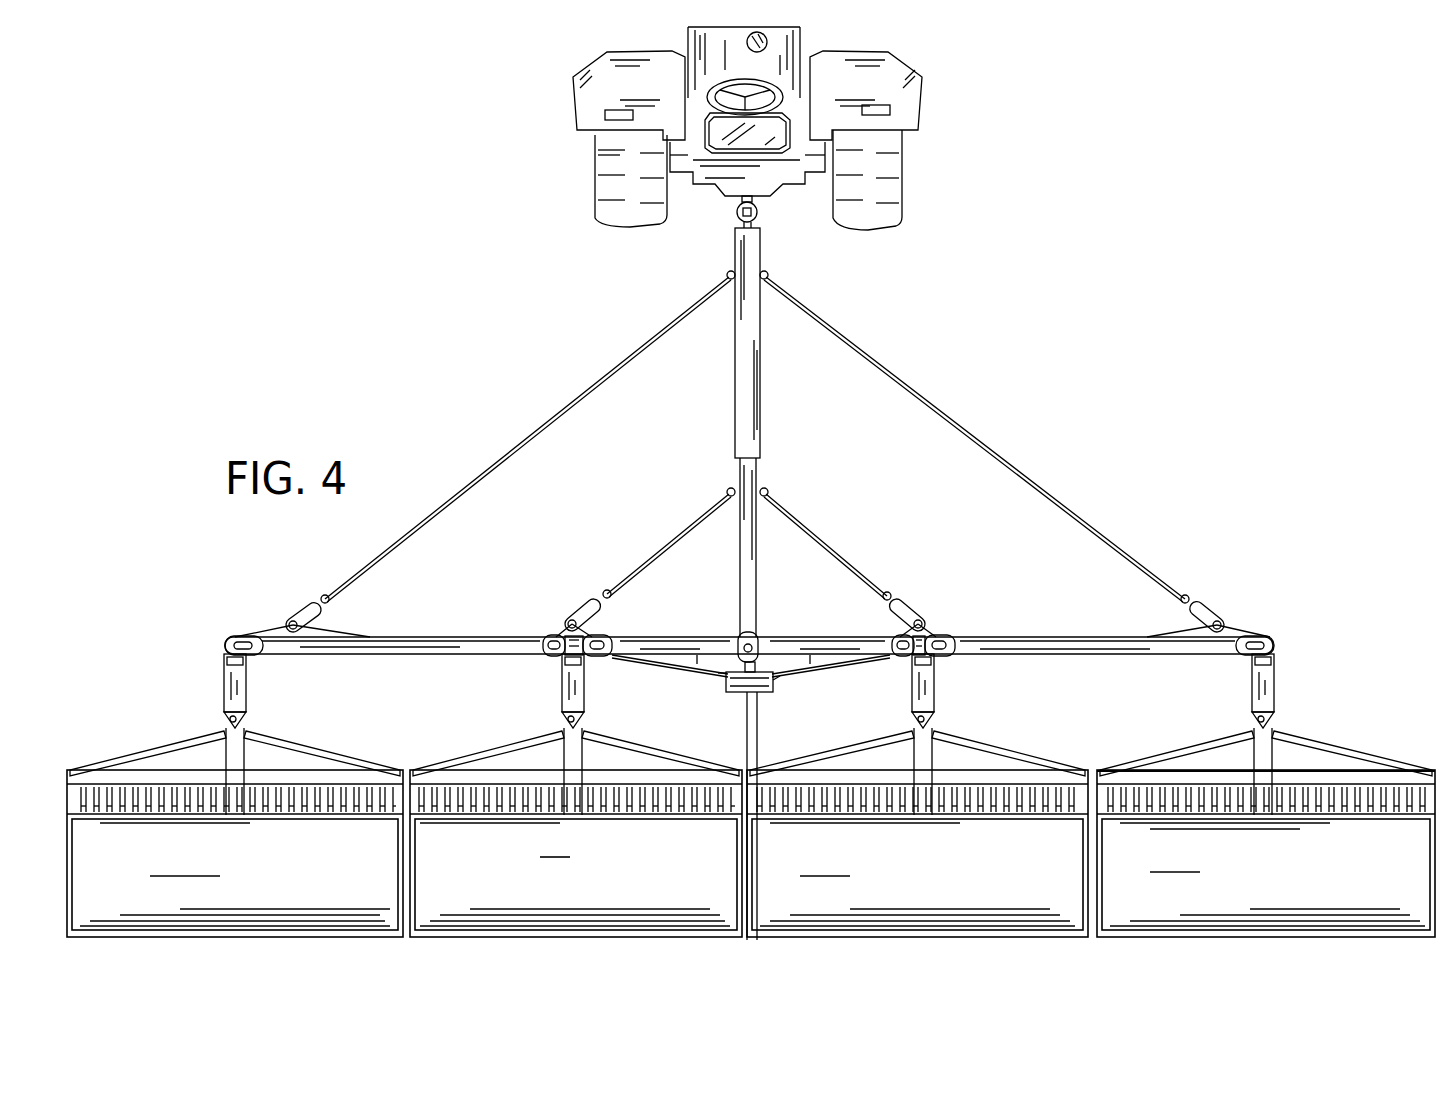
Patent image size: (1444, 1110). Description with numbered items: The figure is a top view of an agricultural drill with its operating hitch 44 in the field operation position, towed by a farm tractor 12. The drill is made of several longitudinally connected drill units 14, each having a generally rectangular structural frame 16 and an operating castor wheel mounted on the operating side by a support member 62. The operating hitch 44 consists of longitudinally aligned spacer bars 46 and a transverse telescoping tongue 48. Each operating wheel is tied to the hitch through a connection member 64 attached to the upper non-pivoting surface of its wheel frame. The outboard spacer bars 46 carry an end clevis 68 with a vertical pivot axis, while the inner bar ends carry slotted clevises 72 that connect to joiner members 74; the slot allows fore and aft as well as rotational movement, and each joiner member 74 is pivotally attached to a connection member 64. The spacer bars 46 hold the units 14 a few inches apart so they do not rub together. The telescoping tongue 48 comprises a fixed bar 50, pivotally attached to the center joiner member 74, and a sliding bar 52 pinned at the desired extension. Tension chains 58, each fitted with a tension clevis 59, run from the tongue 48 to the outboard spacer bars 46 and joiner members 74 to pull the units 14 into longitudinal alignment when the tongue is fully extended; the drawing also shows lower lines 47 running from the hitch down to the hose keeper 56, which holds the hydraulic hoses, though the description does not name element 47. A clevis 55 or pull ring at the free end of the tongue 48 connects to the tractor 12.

The farm tractor 12 is at (548, 153).
The drill unit 14 is at (1320, 897).
The structural frame 16 is at (1437, 775).
The operating hitch 44 is at (1122, 390).
The spacer bar 46 is at (490, 634).
The lower cable 47 is at (556, 633).
The telescoping tongue 48 is at (697, 437).
The fixed bar 50 is at (738, 478).
The sliding bar 52 is at (735, 390).
The clevis 55 is at (740, 217).
The hose keeper 56 is at (724, 688).
The tension chain 58 is at (560, 405).
The tension clevis 59 is at (300, 612).
The support member 62 is at (1265, 752).
The connection member 64 is at (247, 681).
The end clevis 68 is at (226, 637).
The slotted clevis 72 is at (548, 656).
The joiner member 74 is at (925, 635).